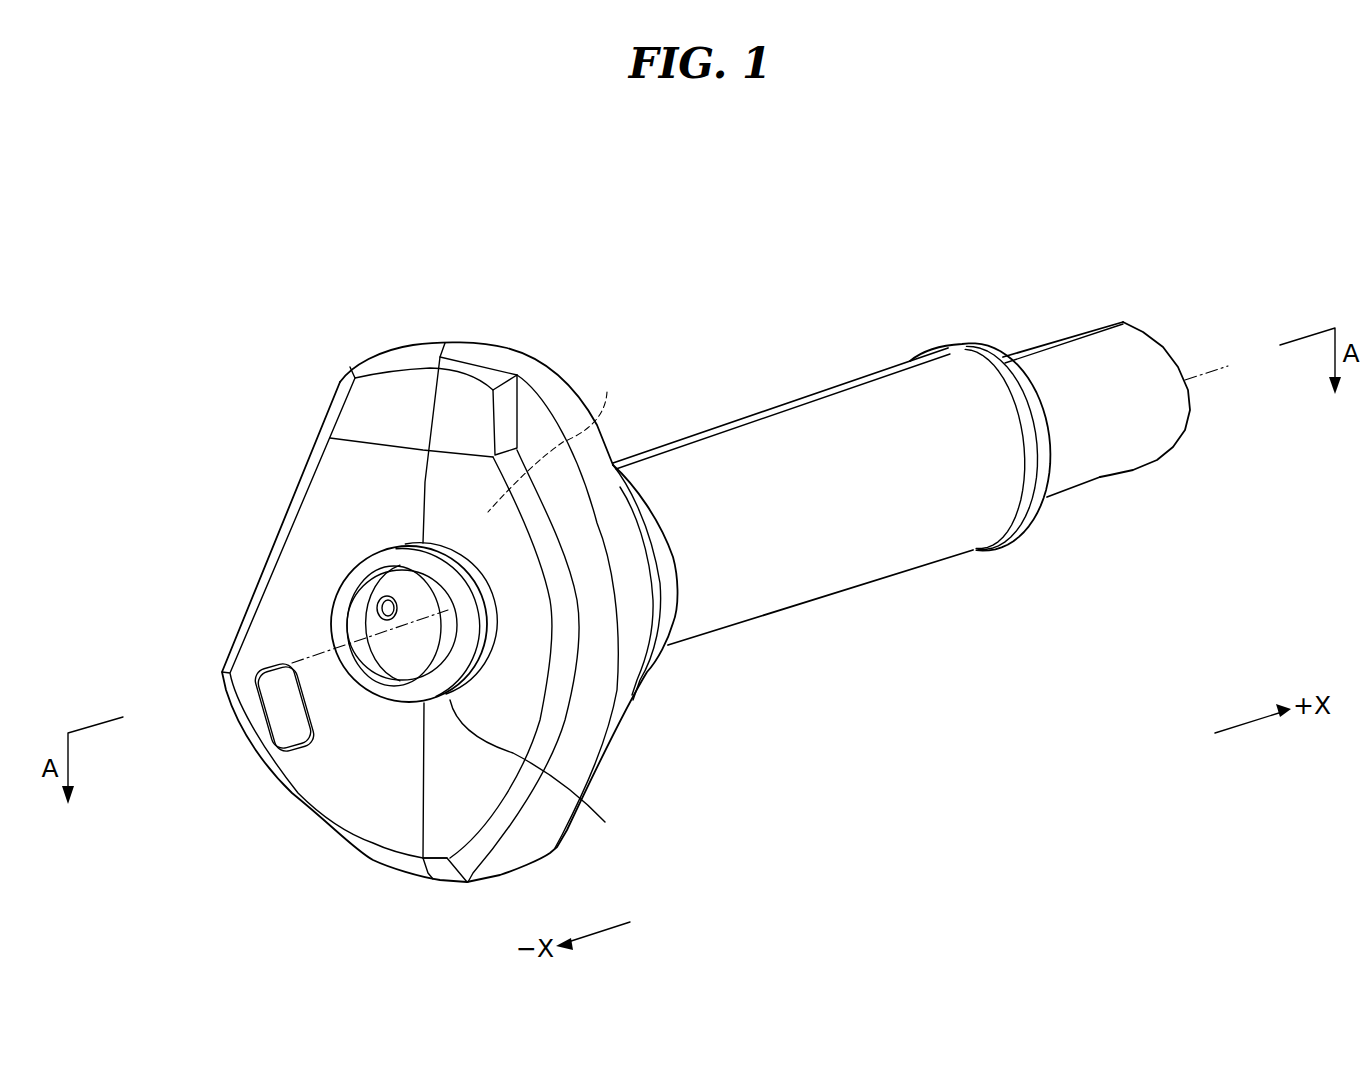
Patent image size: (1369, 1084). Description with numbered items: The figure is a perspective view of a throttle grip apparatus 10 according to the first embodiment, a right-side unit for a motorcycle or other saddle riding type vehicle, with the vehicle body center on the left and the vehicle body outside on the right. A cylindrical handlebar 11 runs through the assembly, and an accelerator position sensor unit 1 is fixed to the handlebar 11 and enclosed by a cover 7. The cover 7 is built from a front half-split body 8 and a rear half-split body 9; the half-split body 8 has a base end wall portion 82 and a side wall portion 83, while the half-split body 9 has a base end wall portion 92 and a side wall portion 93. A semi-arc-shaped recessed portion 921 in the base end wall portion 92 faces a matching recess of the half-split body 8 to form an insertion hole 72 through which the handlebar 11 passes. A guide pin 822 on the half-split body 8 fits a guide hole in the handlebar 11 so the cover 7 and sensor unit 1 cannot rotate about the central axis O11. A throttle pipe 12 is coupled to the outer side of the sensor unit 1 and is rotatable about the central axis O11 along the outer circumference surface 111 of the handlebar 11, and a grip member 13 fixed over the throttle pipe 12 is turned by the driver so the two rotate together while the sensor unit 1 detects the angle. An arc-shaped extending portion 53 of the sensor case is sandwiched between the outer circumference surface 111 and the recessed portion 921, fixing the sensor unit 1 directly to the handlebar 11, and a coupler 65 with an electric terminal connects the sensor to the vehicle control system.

The accelerator position sensor unit 1 is at (553, 439).
The cover 7 is at (457, 571).
The half-split body 8 is at (414, 583).
The half-split body 9 is at (561, 592).
The throttle grip apparatus 10 is at (966, 153).
The handlebar 11 is at (910, 449).
The throttle pipe 12 is at (767, 447).
The grip member 13 is at (850, 372).
The extending portion 53 is at (487, 660).
The coupler 65 is at (292, 730).
The insertion hole 72 is at (423, 543).
The base end wall portion 82 is at (383, 810).
The side wall portion 83 is at (448, 347).
The base end wall portion 92 is at (457, 807).
The side wall portion 93 is at (523, 367).
The outer circumference surface 111 is at (1133, 363).
The guide pin 822 is at (378, 600).
The semi-arc-shaped recessed portion 921 is at (547, 775).
The central axis O11 is at (308, 655).